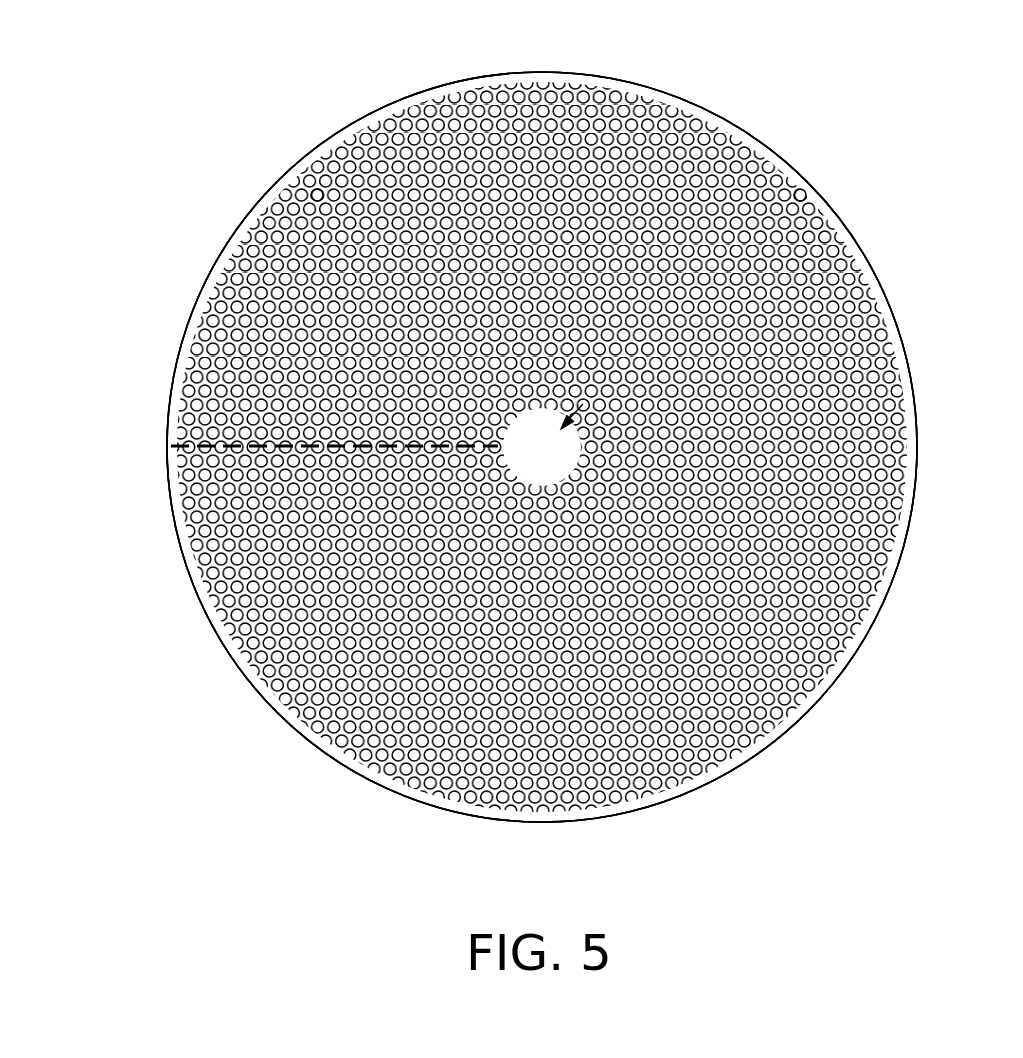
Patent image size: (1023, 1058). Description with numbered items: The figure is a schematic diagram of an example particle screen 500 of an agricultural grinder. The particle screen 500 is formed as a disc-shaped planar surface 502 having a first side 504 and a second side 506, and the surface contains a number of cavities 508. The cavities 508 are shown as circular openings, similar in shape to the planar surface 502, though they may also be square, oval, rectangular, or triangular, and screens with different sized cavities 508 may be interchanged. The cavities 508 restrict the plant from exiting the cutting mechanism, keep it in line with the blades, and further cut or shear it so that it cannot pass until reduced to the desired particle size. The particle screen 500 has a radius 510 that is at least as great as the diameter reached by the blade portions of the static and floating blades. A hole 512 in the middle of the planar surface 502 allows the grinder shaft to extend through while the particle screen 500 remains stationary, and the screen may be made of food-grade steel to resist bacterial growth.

The particle screen 500 is at (900, 75).
The planar surface 502 is at (860, 235).
The first side 504 is at (830, 520).
The second side 506 is at (499, 830).
The cavities 508 is at (291, 170).
The radius 510 is at (158, 419).
The hole 512 is at (797, 185).